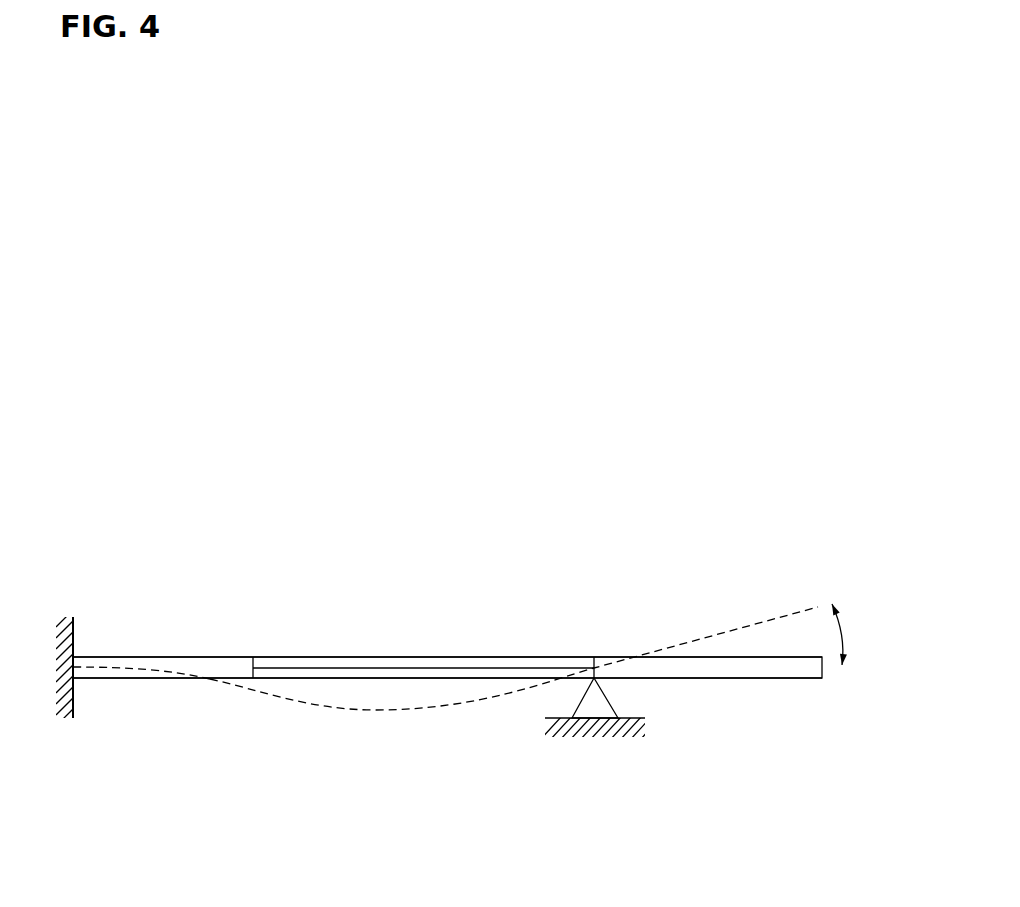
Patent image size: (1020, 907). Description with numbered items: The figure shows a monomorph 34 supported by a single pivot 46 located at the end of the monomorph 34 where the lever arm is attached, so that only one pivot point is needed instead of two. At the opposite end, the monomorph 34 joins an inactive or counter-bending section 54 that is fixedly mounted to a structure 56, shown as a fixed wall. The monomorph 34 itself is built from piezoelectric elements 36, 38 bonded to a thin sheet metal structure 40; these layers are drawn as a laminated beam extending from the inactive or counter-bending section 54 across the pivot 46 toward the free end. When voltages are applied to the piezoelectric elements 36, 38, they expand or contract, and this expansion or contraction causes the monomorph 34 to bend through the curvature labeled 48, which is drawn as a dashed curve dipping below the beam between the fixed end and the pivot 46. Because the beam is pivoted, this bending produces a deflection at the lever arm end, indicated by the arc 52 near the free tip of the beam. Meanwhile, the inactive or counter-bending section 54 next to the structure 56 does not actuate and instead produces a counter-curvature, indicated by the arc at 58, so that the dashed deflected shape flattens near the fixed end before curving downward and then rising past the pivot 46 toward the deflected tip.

The monomorph 34 is at (447, 560).
The piezoelectric element 36 is at (537, 621).
The piezoelectric element 38 is at (537, 621).
The thin sheet metal structure 40 is at (387, 658).
The pivot 46 is at (592, 728).
The curvature 48 is at (402, 723).
The arc 52 is at (819, 608).
The inactive or counter-bending section 54 is at (202, 657).
The structure 56 is at (65, 681).
The arc 58 is at (143, 681).